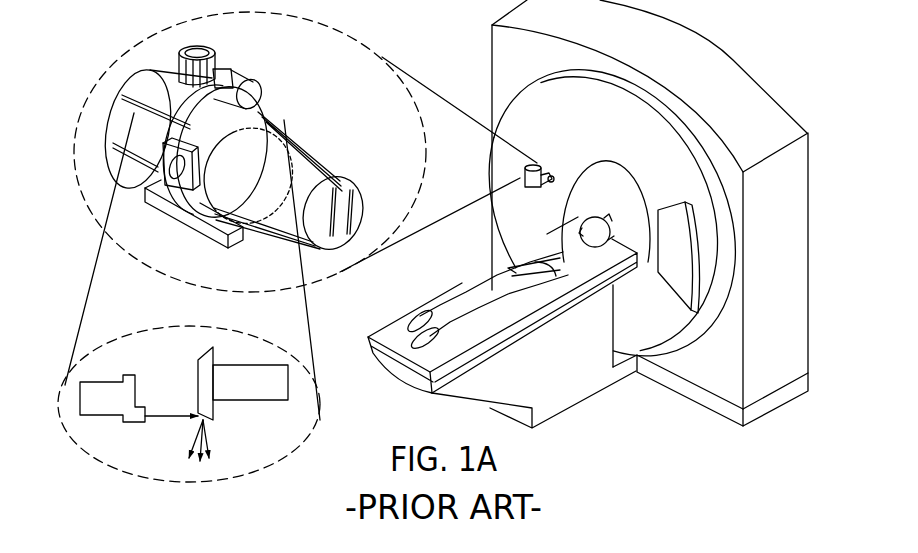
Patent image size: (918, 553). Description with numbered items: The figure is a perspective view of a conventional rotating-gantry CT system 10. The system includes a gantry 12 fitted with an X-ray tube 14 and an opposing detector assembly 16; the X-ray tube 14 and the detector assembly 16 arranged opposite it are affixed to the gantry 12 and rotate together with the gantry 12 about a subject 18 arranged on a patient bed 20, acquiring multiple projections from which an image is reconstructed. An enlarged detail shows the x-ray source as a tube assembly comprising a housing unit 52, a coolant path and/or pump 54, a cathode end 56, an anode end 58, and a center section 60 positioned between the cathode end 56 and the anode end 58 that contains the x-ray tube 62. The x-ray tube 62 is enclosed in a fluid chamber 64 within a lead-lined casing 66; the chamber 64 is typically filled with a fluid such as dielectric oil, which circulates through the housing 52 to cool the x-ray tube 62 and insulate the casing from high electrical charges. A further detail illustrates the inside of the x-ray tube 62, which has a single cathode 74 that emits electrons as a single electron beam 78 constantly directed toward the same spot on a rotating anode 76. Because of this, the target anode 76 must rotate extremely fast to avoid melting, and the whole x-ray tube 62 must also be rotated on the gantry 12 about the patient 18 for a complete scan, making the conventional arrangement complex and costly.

The CT system 10 is at (468, 46).
The gantry 12 is at (527, 81).
The X-ray tube 14 is at (537, 156).
The detector assembly 16 is at (665, 200).
The subject 18 is at (547, 232).
The patient bed 20 is at (387, 328).
The housing unit 52 is at (286, 119).
The coolant path and/or pump 54 is at (256, 99).
The cathode end 56 is at (118, 162).
The anode end 58 is at (289, 250).
The center section 60 is at (193, 203).
The x-ray tube 62 is at (265, 117).
The fluid chamber 64 is at (333, 170).
The lead-lined casing 66 is at (338, 236).
The cathode 74 is at (137, 421).
The rotating anode 76 is at (197, 383).
The electron beam 78 is at (183, 412).